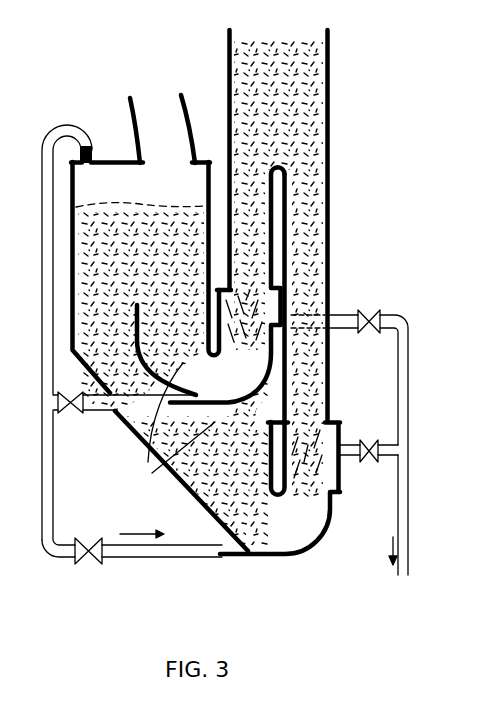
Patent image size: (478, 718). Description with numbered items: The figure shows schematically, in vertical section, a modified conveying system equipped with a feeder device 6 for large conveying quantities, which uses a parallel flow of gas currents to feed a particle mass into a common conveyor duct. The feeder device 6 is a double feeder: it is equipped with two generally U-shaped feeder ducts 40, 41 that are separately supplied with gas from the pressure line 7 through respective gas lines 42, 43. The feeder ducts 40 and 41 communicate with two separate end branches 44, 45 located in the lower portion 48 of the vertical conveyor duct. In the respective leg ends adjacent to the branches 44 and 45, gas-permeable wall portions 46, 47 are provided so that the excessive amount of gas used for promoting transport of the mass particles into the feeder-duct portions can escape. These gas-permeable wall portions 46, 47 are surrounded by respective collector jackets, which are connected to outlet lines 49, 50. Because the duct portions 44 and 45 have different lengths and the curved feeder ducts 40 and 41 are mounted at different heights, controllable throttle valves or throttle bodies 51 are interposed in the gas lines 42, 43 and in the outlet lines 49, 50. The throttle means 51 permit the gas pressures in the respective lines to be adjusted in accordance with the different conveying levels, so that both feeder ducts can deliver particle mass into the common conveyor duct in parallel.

The feeder device 6 is at (150, 484).
The pressure line 7 is at (47, 193).
The feeder duct 40 is at (210, 487).
The feeder duct 41 is at (152, 326).
The gas line 42 is at (142, 550).
The gas line 43 is at (102, 402).
The end branch 44 is at (308, 135).
The end branch 45 is at (238, 195).
The gas-permeable wall portion 46 is at (340, 437).
The gas-permeable wall portion 47 is at (216, 302).
The lower portion of the vertical conveyor duct 48 is at (332, 75).
The outlet line 49 is at (350, 463).
The outlet line 50 is at (347, 315).
The throttle valve 51 is at (70, 408).